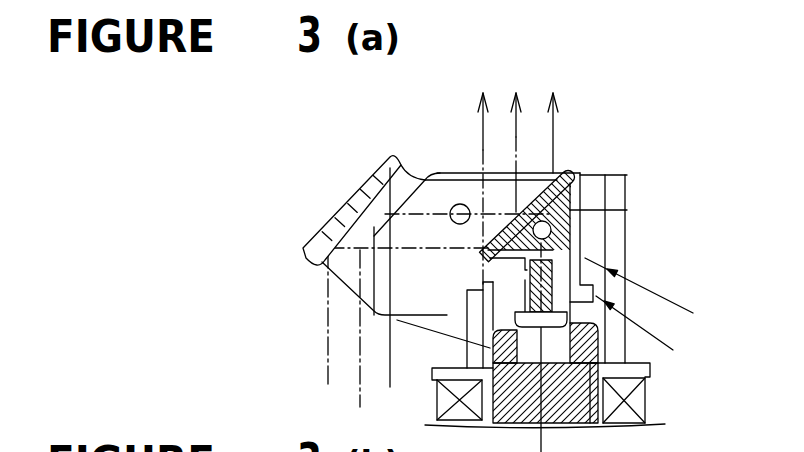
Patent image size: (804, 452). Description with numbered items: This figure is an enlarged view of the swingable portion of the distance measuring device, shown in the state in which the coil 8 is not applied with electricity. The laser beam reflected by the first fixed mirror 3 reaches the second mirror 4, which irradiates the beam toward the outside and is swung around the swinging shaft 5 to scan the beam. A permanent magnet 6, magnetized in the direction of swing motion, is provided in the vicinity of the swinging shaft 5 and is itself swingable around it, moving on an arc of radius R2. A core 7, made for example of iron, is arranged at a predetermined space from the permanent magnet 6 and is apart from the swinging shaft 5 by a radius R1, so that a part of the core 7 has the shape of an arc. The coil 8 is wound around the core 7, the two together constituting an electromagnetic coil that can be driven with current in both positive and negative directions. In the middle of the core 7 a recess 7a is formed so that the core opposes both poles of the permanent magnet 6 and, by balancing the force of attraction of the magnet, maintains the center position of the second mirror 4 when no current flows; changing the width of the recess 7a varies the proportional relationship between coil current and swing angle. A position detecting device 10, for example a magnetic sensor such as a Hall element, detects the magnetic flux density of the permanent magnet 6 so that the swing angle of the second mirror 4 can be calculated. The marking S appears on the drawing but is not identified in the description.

The first fixed mirror 3 is at (318, 262).
The second mirror 4 is at (555, 170).
The swinging shaft 5 is at (605, 208).
The permanent magnet 6 is at (600, 240).
The core 7 is at (608, 345).
The recess 7a is at (545, 438).
The coil 8 is at (637, 411).
The position detecting device 10 is at (468, 300).
The radius R1 is at (642, 323).
The radius R2 is at (643, 286).
The spring S is at (474, 328).